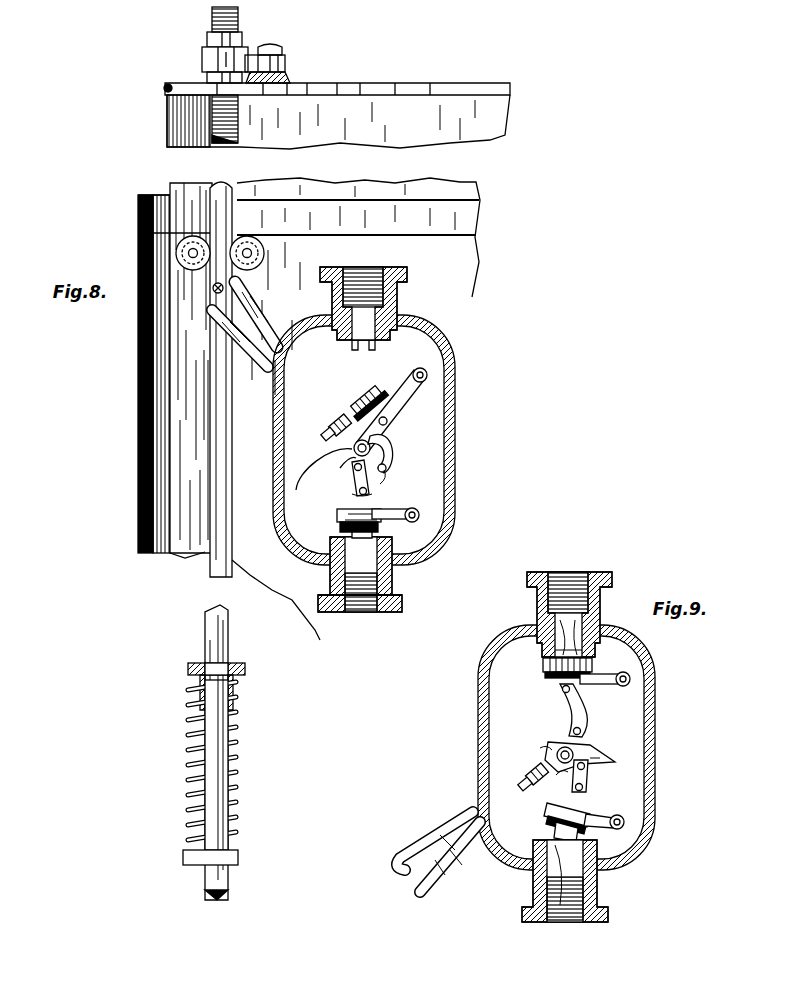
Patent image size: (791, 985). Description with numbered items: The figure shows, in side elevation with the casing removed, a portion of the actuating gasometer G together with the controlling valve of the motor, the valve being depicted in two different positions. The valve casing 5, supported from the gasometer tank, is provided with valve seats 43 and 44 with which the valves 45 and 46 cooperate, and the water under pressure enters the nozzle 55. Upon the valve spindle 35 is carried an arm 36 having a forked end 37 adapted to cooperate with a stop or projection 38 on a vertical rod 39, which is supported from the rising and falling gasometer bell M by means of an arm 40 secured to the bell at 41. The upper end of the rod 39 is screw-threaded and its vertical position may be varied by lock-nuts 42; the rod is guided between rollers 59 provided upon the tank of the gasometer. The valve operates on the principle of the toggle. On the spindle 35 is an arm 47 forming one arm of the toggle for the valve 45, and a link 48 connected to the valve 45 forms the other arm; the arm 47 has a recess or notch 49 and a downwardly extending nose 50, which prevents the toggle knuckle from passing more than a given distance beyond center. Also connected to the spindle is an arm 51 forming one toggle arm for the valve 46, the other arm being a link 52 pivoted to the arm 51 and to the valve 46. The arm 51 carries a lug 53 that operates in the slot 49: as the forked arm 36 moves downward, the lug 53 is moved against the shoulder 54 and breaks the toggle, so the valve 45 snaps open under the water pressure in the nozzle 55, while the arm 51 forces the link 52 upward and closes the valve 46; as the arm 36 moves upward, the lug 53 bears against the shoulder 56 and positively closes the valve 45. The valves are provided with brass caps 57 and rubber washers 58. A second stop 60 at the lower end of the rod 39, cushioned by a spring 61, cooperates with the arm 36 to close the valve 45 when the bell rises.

In FIG. 8, the valve casing 5 is at (456, 416).
In FIG. 9, the valve casing 5 is at (566, 747).
In FIG. 8, the valve spindle 35 is at (372, 448).
In FIG. 8, the arm 36 is at (268, 332).
In FIG. 9, the arm 36 is at (438, 852).
In FIG. 8, the forked end 37 is at (240, 347).
In FIG. 8, the stop 38 is at (215, 291).
In FIG. 8, the vertical rod 39 is at (215, 195).
In FIG. 8, the arm 40 is at (250, 45).
In FIG. 8, the securing point 41 is at (290, 80).
In FIG. 8, the lock-nuts 42 is at (208, 45).
In FIG. 8, the valve seat 43 is at (325, 553).
In FIG. 9, the valve seat 43 is at (563, 916).
In FIG. 8, the valve seat 44 is at (405, 328).
In FIG. 9, the valve seat 44 is at (541, 626).
In FIG. 8, the valve 45 is at (340, 514).
In FIG. 9, the valve 45 is at (600, 826).
In FIG. 8, the valve 46 is at (360, 400).
In FIG. 9, the valve 46 is at (555, 666).
In FIG. 8, the arm 47 is at (350, 460).
In FIG. 9, the arm 47 is at (560, 777).
In FIG. 8, the link 48 is at (367, 479).
In FIG. 9, the link 48 is at (590, 777).
In FIG. 8, the recess or notch 49 is at (348, 451).
In FIG. 8, the nose 50 is at (370, 493).
In FIG. 9, the nose 50 is at (600, 762).
In FIG. 8, the arm 51 is at (392, 470).
In FIG. 9, the arm 51 is at (590, 742).
In FIG. 8, the link 52 is at (392, 442).
In FIG. 9, the link 52 is at (586, 709).
In FIG. 8, the lug 53 is at (336, 430).
In FIG. 9, the lug 53 is at (548, 760).
In FIG. 8, the shoulder 54 is at (336, 478).
In FIG. 9, the shoulder 54 is at (530, 784).
In FIG. 8, the nozzle 55 is at (355, 613).
In FIG. 8, the shoulder 56 is at (345, 414).
In FIG. 9, the shoulder 56 is at (548, 761).
In FIG. 8, the brass caps 57 is at (385, 526).
In FIG. 9, the brass caps 57 is at (568, 612).
In FIG. 8, the rubber washers 58 is at (380, 523).
In FIG. 9, the rubber washers 58 is at (594, 662).
In FIG. 8, the rollers 59 is at (190, 250).
In FIG. 8, the stop 60 is at (243, 672).
In FIG. 8, the spring 61 is at (245, 750).
In FIG. 8, the gasometer bell M is at (337, 116).
In FIG. 8, the actuating gasometer G is at (443, 266).